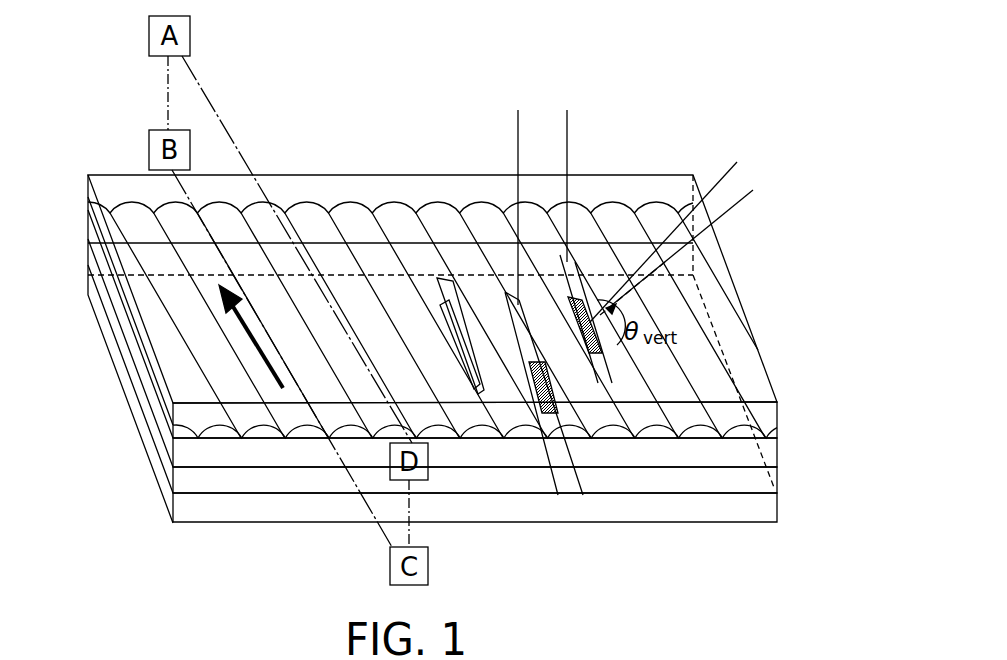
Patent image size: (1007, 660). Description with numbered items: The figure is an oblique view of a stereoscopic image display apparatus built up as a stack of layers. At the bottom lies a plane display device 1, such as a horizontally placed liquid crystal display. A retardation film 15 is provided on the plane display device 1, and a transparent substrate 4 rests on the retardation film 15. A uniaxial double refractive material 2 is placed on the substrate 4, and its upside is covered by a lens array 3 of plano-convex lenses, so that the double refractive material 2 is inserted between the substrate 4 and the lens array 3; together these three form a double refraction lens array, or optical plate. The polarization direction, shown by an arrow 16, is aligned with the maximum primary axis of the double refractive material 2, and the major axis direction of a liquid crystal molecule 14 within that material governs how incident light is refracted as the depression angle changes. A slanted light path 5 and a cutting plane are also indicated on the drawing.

The plane display device 1 is at (180, 505).
The uniaxial double refractive material 2 is at (213, 433).
The lens array 3 is at (207, 408).
The transparent substrate 4 is at (185, 452).
The light beam 5 is at (533, 430).
The liquid crystal molecule 14 is at (474, 394).
The retardation film 15 is at (188, 477).
The arrow 16 is at (257, 338).